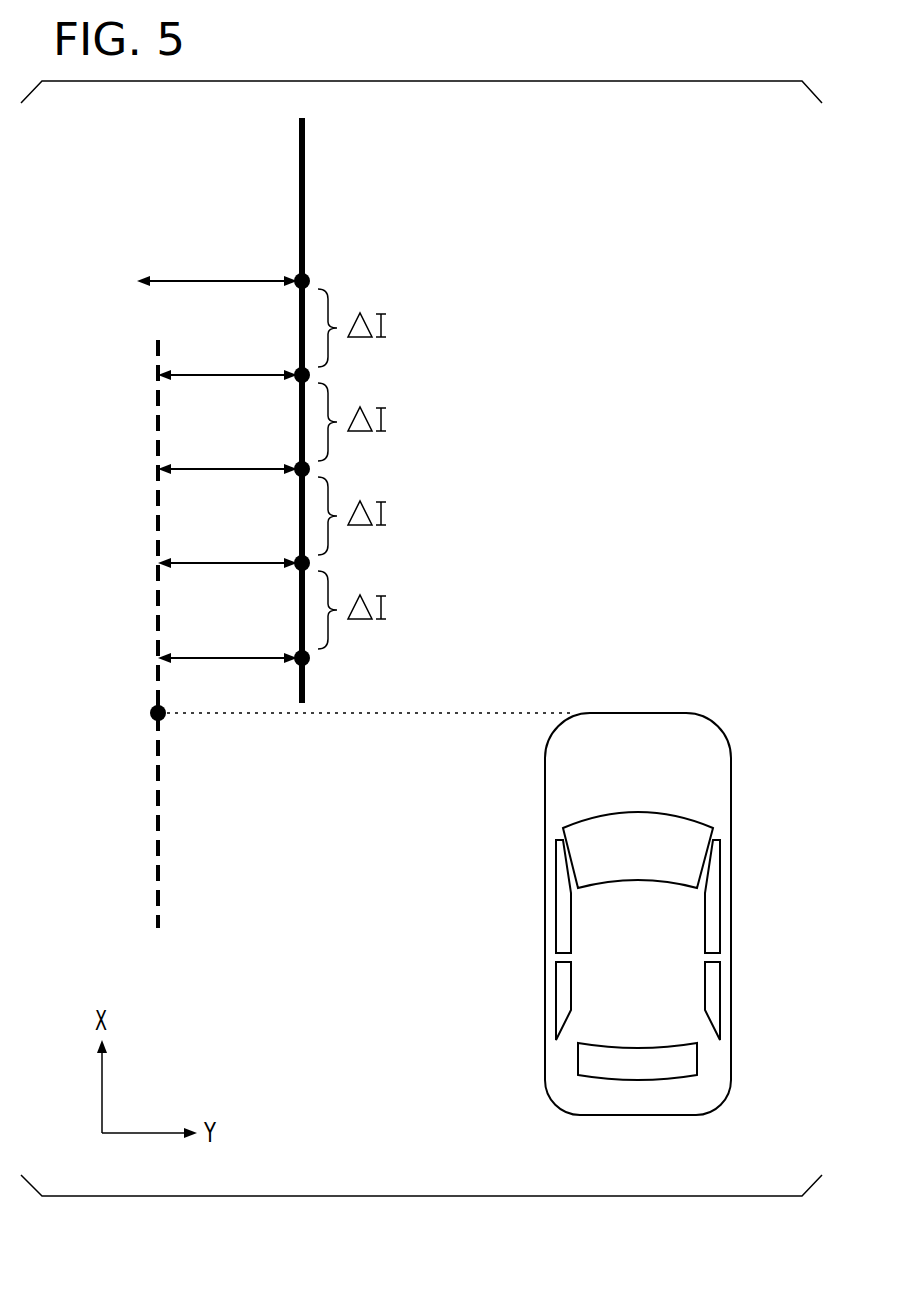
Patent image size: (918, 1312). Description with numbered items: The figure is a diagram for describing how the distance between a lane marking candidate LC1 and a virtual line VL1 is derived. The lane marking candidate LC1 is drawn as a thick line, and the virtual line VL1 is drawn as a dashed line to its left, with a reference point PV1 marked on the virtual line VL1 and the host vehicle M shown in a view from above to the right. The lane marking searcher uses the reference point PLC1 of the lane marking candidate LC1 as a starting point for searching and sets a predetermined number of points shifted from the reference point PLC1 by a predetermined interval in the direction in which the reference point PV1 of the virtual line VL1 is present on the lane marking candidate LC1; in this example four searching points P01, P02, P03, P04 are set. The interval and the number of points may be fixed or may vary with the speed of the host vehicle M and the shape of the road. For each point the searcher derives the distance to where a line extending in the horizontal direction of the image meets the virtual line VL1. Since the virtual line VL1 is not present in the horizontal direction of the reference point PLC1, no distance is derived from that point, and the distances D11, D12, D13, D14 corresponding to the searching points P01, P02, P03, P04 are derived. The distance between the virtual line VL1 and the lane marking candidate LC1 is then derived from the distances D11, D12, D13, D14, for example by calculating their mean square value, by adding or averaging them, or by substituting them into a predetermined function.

The lane marking candidate LC1 is at (305, 148).
The reference point of the lane marking candidate PLC1 is at (309, 277).
The first searching point P01 is at (310, 375).
The second searching point P02 is at (310, 469).
The third searching point P03 is at (310, 563).
The fourth searching point P04 is at (310, 658).
The distance D11 is at (227, 359).
The distance D12 is at (227, 453).
The distance D13 is at (227, 547).
The distance D14 is at (227, 642).
The reference point of the virtual line PV1 is at (150, 713).
The virtual line VL1 is at (155, 799).
The host vehicle M is at (733, 913).